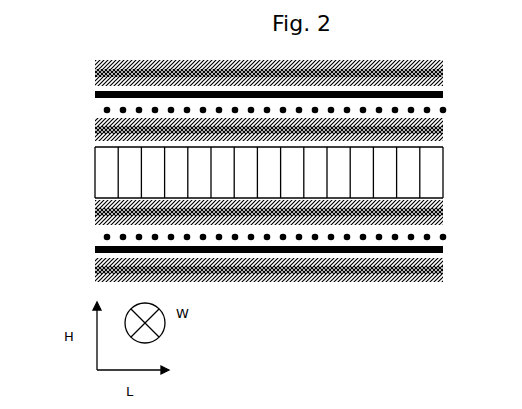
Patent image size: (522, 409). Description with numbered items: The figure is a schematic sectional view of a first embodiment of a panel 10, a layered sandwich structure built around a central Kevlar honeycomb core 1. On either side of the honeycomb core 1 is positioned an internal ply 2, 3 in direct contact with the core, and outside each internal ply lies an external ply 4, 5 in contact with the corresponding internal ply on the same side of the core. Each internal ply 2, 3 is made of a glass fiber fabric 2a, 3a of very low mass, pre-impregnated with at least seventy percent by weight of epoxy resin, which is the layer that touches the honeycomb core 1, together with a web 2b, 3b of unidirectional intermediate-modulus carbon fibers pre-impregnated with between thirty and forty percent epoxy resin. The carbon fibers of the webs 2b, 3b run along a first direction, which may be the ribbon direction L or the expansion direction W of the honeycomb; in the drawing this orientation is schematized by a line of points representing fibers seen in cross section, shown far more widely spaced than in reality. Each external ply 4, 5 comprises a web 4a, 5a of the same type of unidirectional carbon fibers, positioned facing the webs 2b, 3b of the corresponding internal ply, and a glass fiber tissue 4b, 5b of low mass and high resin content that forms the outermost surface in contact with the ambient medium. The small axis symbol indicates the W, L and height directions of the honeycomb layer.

The panel 10 is at (48, 62).
The honeycomb core 1 is at (131, 180).
The internal ply 2 is at (88, 101).
The glass fiber fabric 2a is at (440, 143).
The web of unidirectional carbon fibers 2b is at (447, 107).
The internal ply 3 is at (88, 199).
The glass fiber fabric 3a is at (440, 199).
The web of unidirectional carbon fibers 3b is at (447, 227).
The external ply 4 is at (88, 62).
The web of unidirectional carbon fibers 4a is at (434, 92).
The glass fiber tissue 4b is at (393, 66).
The external ply 5 is at (88, 238).
The web of unidirectional carbon fibers 5a is at (440, 250).
The glass fiber tissue 5b is at (398, 282).